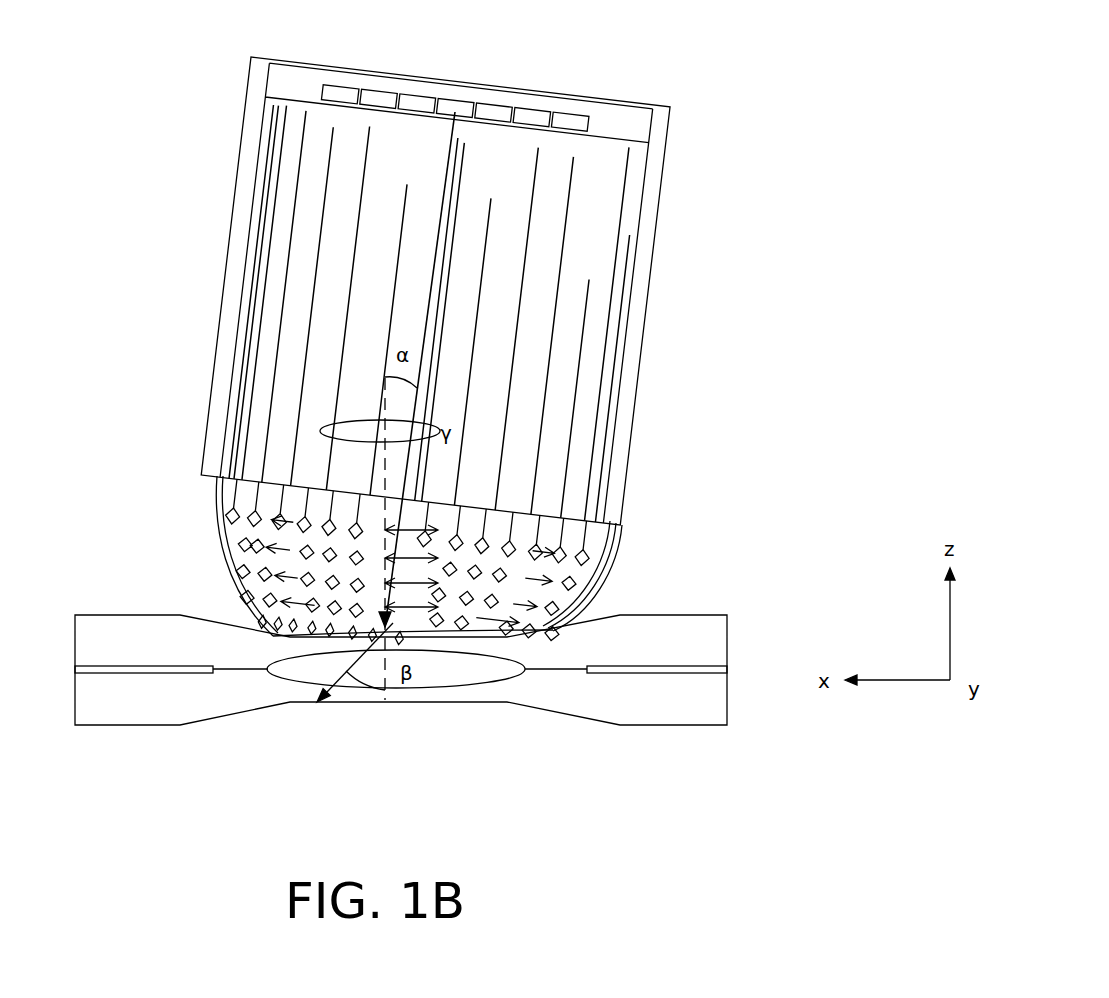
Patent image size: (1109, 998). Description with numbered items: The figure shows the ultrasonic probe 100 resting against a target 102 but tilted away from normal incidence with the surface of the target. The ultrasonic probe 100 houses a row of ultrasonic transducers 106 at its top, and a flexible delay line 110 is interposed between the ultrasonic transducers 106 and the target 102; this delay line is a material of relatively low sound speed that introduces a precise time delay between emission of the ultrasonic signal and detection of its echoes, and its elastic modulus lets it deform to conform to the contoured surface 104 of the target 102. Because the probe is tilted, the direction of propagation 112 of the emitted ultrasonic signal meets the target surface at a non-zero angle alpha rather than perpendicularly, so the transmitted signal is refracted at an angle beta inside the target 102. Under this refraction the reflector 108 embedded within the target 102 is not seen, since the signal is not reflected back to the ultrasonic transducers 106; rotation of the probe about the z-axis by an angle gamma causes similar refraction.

The ultrasonic probe 100 is at (456, 336).
The target 102 is at (710, 640).
The contoured surface 104 is at (568, 586).
The ultrasonic transducers 106 is at (454, 108).
The reflector 108 is at (458, 668).
The flexible delay line 110 is at (403, 571).
The direction of propagation 112 is at (434, 313).